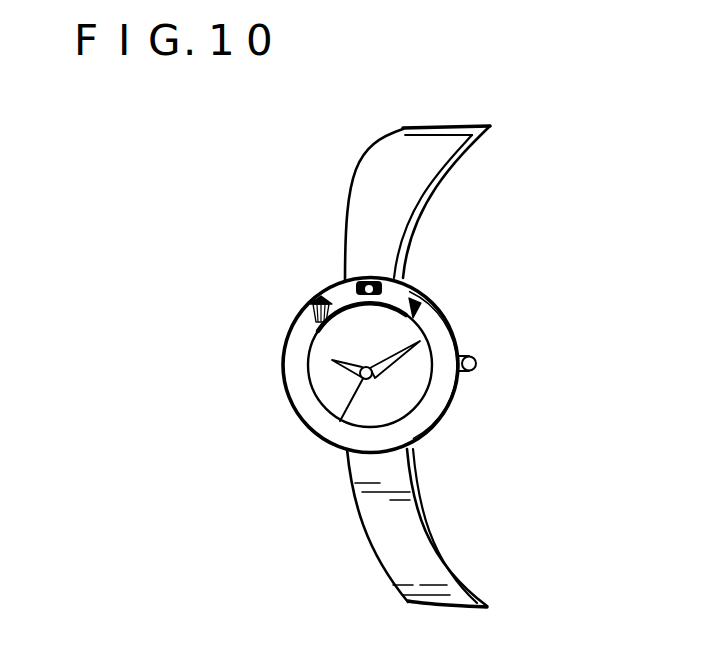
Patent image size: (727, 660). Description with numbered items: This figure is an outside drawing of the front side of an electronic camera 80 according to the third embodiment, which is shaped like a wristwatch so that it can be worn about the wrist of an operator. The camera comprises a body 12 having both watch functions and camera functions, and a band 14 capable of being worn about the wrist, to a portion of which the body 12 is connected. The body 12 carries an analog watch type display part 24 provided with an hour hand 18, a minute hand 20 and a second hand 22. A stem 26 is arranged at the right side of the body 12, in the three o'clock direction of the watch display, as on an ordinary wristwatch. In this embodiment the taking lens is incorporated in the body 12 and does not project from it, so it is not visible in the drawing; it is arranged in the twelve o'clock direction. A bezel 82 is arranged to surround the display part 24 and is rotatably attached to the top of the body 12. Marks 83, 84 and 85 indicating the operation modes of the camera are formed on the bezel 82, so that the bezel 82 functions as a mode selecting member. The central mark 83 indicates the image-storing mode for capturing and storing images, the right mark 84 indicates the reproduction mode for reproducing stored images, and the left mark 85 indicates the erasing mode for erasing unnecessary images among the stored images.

The electronic camera 80 is at (320, 245).
The body 12 is at (458, 338).
The band 14 is at (380, 543).
The hour hand 18 is at (352, 353).
The minute hand 20 is at (407, 360).
The second hand 22 is at (340, 421).
The display part 24 is at (324, 384).
The stem 26 is at (476, 367).
The bezel 82 is at (419, 428).
The central mark 83 is at (366, 279).
The right mark 84 is at (424, 305).
The left mark 85 is at (310, 302).